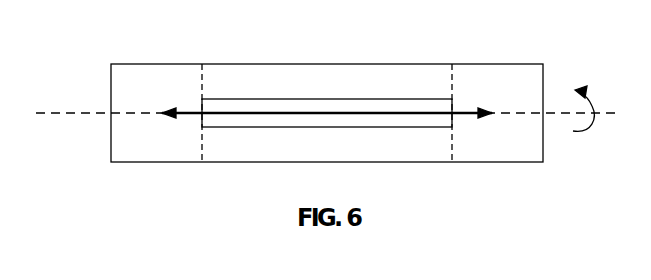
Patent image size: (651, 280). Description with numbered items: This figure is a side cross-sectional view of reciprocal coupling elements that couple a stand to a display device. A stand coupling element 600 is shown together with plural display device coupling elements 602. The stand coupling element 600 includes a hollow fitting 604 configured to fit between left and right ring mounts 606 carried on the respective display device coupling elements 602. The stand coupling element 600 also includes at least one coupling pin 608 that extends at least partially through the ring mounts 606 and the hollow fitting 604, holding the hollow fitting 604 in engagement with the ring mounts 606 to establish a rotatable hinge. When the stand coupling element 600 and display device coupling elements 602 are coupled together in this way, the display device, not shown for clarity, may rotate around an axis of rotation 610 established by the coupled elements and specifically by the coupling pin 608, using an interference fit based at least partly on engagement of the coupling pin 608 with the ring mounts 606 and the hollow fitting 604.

The stand coupling element 600 is at (232, 63).
The display device coupling element 602 is at (157, 63).
The hollow fitting 604 is at (411, 99).
The ring mount 606 is at (161, 111).
The coupling pin 608 is at (386, 116).
The axis of rotation 610 is at (88, 112).